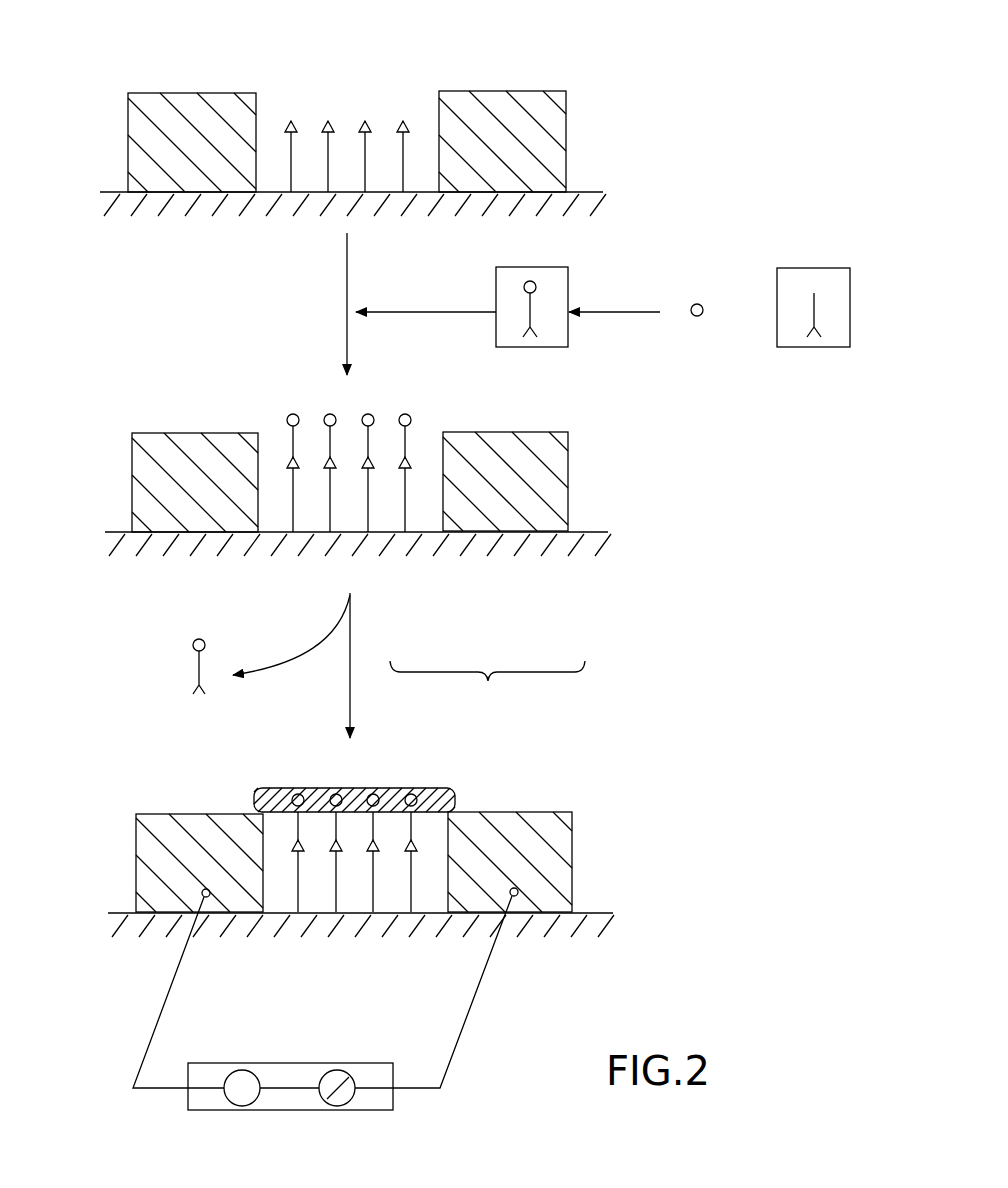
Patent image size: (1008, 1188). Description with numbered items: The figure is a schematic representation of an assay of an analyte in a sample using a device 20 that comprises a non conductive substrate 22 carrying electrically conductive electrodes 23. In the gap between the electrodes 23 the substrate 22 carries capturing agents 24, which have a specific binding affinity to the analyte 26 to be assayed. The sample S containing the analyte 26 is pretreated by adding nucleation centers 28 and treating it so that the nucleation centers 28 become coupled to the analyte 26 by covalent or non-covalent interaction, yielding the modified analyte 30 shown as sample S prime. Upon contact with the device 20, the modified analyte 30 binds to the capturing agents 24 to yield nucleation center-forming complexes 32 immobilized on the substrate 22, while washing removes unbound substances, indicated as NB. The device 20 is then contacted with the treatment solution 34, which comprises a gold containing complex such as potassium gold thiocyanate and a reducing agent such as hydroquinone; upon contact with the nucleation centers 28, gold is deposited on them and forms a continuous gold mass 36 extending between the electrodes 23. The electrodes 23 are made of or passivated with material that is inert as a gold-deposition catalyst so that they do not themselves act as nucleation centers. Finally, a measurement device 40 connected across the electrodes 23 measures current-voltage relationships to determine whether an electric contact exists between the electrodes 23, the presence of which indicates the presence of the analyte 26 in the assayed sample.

The device 20 is at (108, 66).
The non conductive substrate 22 is at (213, 195).
The electrically conductive electrodes 23 is at (199, 106).
The capturing agents 24 is at (292, 153).
The analyte 26 is at (815, 298).
The nucleation centers 28 is at (695, 303).
The modified analyte 30 is at (538, 285).
The nucleation center-forming complexes 32 is at (422, 431).
The treatment solution 34 is at (492, 667).
The continuous gold mass 36 is at (355, 790).
The measurement device 40 is at (290, 1063).